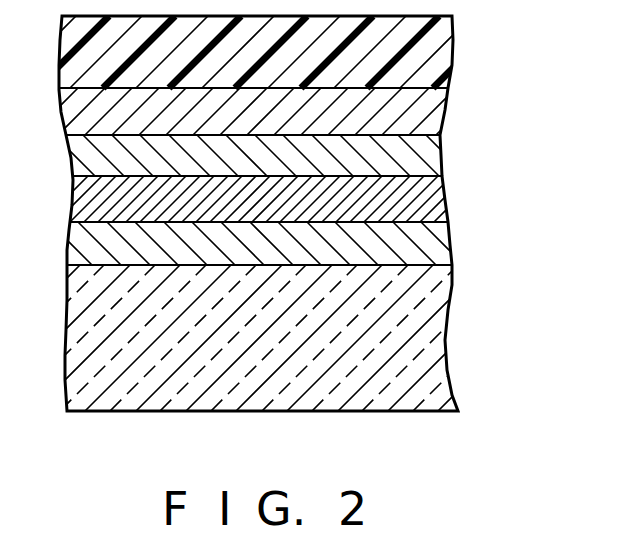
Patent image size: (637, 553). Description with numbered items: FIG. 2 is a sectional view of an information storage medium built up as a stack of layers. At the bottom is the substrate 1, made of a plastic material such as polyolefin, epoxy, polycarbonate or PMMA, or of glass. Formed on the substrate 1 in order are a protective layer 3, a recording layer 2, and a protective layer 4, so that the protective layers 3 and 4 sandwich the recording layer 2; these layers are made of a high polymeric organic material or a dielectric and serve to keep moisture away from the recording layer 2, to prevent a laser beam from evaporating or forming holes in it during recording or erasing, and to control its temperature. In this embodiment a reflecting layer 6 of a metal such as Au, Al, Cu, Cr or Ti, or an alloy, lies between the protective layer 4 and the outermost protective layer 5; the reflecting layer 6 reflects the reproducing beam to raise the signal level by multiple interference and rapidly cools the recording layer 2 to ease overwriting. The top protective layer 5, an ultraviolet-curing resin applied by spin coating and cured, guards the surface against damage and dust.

The substrate 1 is at (440, 338).
The recording layer 2 is at (440, 193).
The protective layer 3 is at (443, 245).
The protective layer 4 is at (435, 152).
The protective layer 5 is at (447, 61).
The reflecting layer 6 is at (437, 108).